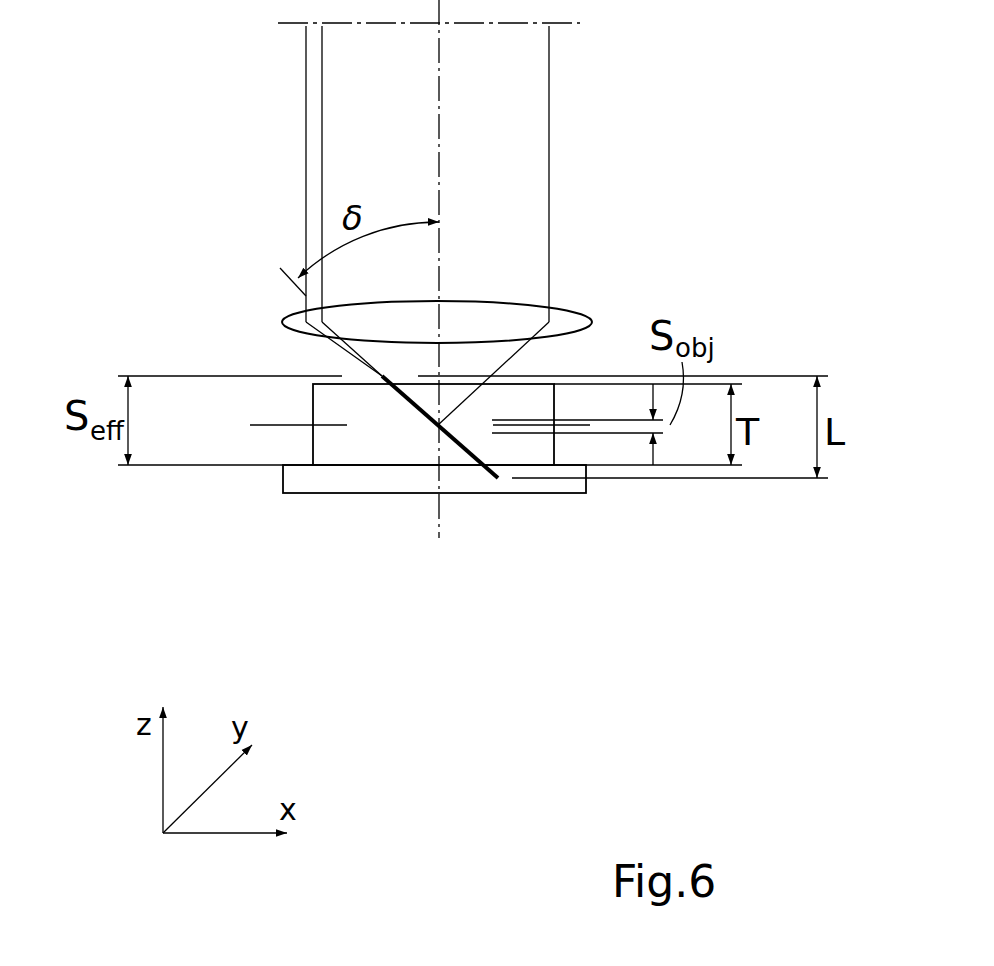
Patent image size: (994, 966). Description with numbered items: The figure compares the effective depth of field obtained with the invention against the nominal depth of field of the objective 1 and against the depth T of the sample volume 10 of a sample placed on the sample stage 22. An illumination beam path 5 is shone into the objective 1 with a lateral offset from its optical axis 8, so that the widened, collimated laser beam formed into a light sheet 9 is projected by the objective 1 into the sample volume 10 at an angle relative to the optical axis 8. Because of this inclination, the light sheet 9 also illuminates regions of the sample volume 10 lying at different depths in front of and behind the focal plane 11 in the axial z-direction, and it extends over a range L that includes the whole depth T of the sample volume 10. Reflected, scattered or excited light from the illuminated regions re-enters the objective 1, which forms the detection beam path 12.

The objective 1 is at (575, 318).
The illumination beam path 5 is at (318, 178).
The optical axis 8 is at (440, 140).
The light sheet 9 is at (462, 448).
The sample volume 10 is at (367, 450).
The focal plane 11 is at (297, 425).
The detection beam path 12 is at (348, 115).
The sample stage 22 is at (533, 482).